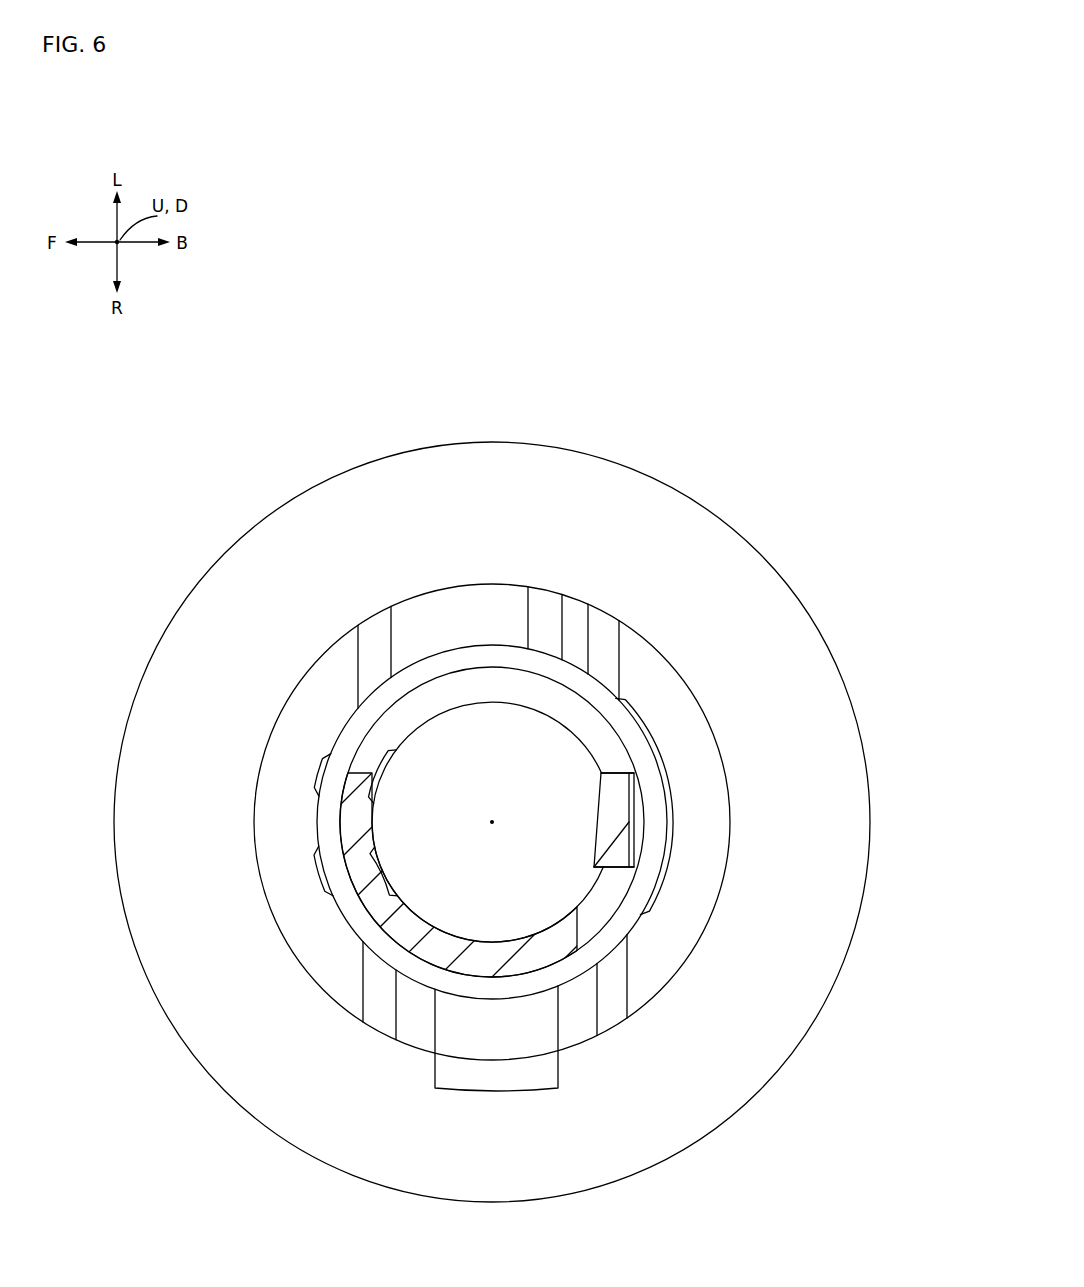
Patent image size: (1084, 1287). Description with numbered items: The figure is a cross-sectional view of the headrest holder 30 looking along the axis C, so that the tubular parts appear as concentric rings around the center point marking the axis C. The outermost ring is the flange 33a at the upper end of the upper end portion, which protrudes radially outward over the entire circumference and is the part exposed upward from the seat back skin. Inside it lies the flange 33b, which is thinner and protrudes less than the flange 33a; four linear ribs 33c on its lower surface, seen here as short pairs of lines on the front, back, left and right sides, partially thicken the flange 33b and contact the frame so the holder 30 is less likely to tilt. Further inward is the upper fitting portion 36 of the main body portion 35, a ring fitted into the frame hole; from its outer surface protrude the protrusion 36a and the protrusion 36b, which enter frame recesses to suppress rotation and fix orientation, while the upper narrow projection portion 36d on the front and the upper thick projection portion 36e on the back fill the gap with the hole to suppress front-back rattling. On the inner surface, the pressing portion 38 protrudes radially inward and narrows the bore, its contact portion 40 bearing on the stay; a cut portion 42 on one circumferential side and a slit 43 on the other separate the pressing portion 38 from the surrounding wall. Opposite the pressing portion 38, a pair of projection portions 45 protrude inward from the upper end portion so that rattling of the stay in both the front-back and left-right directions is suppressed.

The holder 30 is at (706, 462).
The flange 33a is at (773, 597).
The flange 33b is at (714, 782).
The linear ribs 33c is at (373, 630).
The main body portion 35 is at (468, 950).
The upper fitting portion 36 is at (338, 734).
The protrusion 36a is at (497, 1082).
The protrusion 36b is at (545, 603).
The upper narrow projection portion 36d is at (318, 774).
The upper thick projection portion 36e is at (670, 857).
The pressing portion 38 is at (603, 828).
The contact portion 40 is at (603, 832).
The cut portion 42 is at (617, 775).
The slit 43 is at (593, 868).
The projection portion 45 is at (390, 779).
The axis C is at (492, 822).